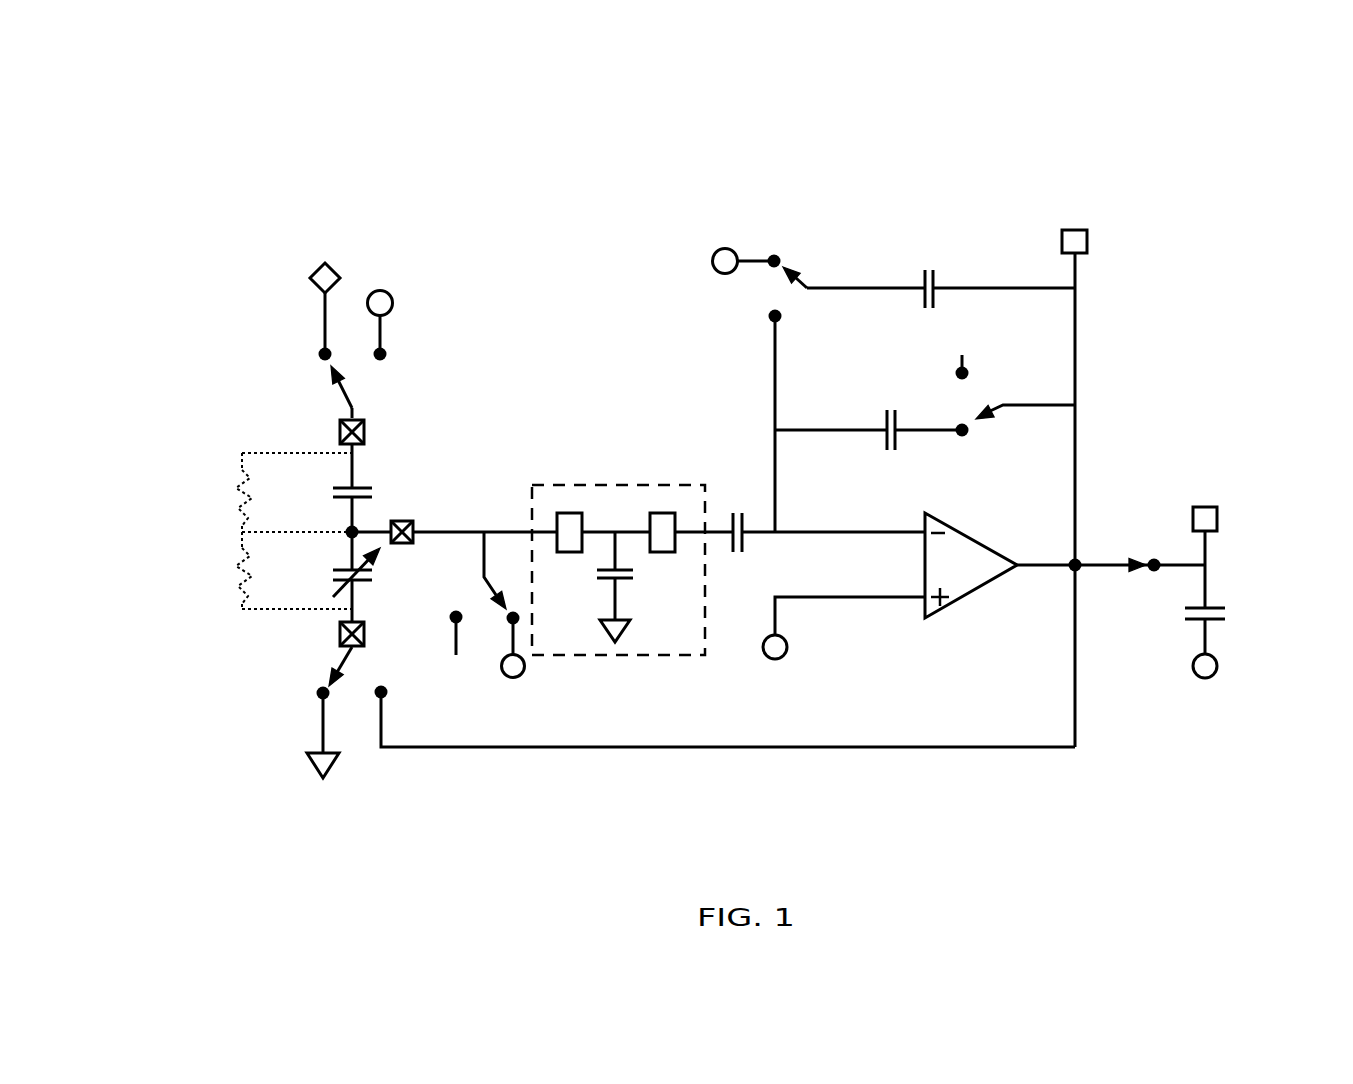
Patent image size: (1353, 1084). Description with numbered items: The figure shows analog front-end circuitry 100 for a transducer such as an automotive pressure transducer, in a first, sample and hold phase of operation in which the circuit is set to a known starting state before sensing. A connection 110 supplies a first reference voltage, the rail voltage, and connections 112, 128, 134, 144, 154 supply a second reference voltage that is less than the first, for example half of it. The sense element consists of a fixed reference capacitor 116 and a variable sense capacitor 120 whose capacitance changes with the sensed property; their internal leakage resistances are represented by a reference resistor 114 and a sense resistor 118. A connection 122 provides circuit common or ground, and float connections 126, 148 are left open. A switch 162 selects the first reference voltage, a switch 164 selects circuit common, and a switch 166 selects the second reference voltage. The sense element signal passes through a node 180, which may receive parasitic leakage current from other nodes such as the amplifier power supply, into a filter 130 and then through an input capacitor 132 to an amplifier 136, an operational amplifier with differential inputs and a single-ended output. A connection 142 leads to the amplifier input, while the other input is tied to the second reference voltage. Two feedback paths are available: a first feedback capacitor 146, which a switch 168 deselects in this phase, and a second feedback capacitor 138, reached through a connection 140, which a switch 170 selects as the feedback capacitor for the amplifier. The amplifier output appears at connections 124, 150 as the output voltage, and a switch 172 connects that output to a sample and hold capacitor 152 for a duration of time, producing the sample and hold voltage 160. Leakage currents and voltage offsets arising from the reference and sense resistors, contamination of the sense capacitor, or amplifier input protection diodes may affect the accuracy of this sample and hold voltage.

The AFE circuitry 100 is at (180, 98).
The connection to first reference voltage 110 is at (323, 332).
The connection to second reference voltage 112 is at (385, 333).
The reference resistor 114 is at (238, 480).
The reference capacitor 116 is at (360, 484).
The sense resistor 118 is at (238, 597).
The sense capacitor 120 is at (365, 585).
The connection to circuit common 122 is at (322, 728).
The connection to output voltage 124 is at (382, 718).
The float connection 126 is at (456, 655).
The connection to second reference voltage 128 is at (524, 667).
The filter 130 is at (630, 485).
The input capacitor 132 is at (745, 553).
The connection to second reference voltage 134 is at (787, 645).
The amplifier 136 is at (980, 587).
The second feedback capacitor 138 is at (884, 420).
The connection to second feedback capacitor 140 is at (968, 436).
The connection to amplifier input 142 is at (767, 322).
The connection to second reference voltage 144 is at (752, 259).
The first feedback capacitor 146 is at (918, 282).
The float connection 148 is at (968, 370).
The connection to output voltage 150 is at (1085, 252).
The sample and hold capacitor 152 is at (1180, 620).
The connection to second reference voltage 154 is at (1213, 675).
The sample and hold voltage 160 is at (1216, 530).
The switch 162 is at (350, 400).
The switch 164 is at (342, 654).
The switch 166 is at (480, 562).
The switch 168 is at (808, 284).
The switch 170 is at (1002, 410).
The switch 172 is at (1117, 552).
The node 180 is at (402, 521).